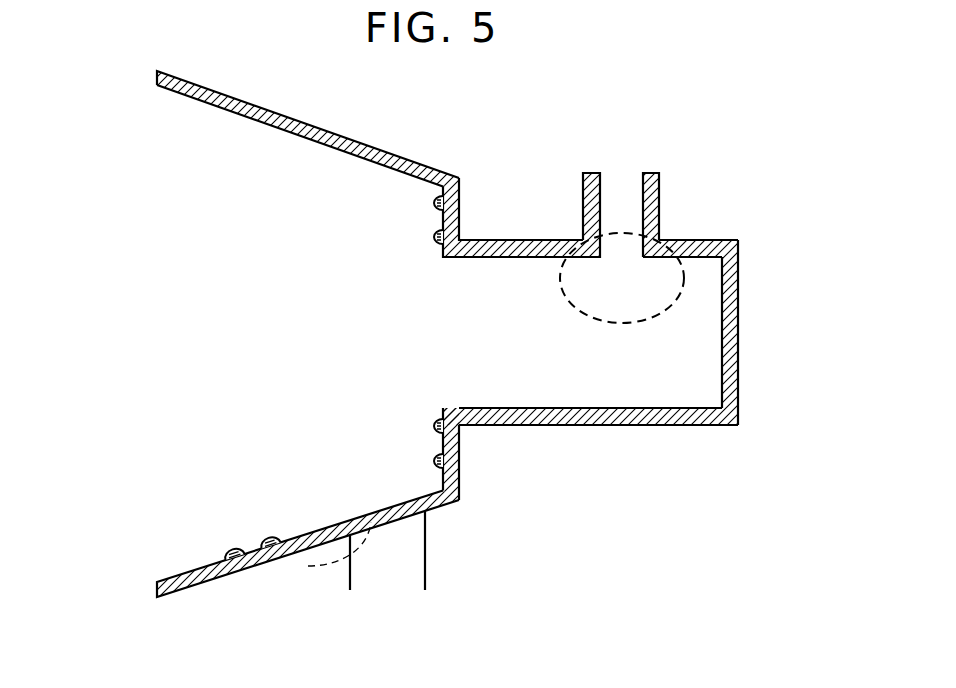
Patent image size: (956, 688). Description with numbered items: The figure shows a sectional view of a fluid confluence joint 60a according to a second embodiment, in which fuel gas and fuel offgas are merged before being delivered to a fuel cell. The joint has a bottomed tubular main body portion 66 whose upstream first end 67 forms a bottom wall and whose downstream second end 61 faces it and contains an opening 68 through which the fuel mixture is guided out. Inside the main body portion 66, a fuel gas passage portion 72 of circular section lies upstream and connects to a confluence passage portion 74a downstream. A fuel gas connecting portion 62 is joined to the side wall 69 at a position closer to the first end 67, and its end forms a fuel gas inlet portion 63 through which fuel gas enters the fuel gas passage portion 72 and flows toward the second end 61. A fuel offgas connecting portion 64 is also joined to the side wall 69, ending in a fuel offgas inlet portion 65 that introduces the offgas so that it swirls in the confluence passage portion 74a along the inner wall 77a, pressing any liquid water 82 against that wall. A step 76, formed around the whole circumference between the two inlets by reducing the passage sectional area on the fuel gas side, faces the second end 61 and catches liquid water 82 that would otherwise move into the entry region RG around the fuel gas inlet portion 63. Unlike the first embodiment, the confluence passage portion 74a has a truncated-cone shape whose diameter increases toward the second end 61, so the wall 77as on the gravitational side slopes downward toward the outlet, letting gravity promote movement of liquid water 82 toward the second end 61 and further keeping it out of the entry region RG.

The fluid confluence joint 60a is at (413, 106).
The side wall 69 is at (376, 142).
The inner wall 77a is at (273, 128).
The liquid water 82 is at (447, 203).
The fuel gas inlet portion 63 is at (610, 257).
The fuel gas connecting portion 62 is at (660, 205).
The entry region RG is at (683, 307).
The first end 67 is at (738, 325).
The confluence passage portion 74a is at (293, 351).
The fuel gas passage portion 72 is at (620, 369).
The step 76 is at (437, 437).
The main body portion 66 is at (570, 441).
The fuel offgas connecting portion 64 is at (425, 537).
The fuel offgas inlet portion 65 is at (323, 552).
The second end 61 is at (157, 585).
The wall on gravitational side 77as is at (200, 567).
The opening 68 is at (137, 432).